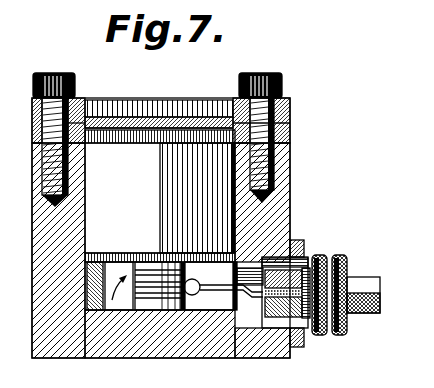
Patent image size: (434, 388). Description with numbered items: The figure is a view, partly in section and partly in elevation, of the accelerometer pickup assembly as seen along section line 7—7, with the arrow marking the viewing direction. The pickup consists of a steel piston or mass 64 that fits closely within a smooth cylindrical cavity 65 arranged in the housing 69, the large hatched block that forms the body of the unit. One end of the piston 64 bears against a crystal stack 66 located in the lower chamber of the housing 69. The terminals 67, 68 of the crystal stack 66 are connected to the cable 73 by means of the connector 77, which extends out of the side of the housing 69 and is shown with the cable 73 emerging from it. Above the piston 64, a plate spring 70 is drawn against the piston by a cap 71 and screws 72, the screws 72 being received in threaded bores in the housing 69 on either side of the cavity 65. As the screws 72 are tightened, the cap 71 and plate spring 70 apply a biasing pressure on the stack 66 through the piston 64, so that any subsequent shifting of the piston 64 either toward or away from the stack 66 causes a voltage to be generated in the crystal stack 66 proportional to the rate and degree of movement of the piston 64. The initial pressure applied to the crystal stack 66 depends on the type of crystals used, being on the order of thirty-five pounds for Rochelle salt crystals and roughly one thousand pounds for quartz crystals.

The section line 7 is at (13, 228).
The piston 64 is at (145, 225).
The cylindrical cavity 65 is at (88, 215).
The crystal stack 66 is at (128, 285).
The terminal 67 is at (235, 300).
The terminal 68 is at (224, 292).
The housing 69 is at (44, 273).
The plate spring 70 is at (141, 133).
The cap 71 is at (186, 102).
The screws 72 is at (76, 86).
The cable 73 is at (352, 312).
The connector 77 is at (338, 256).